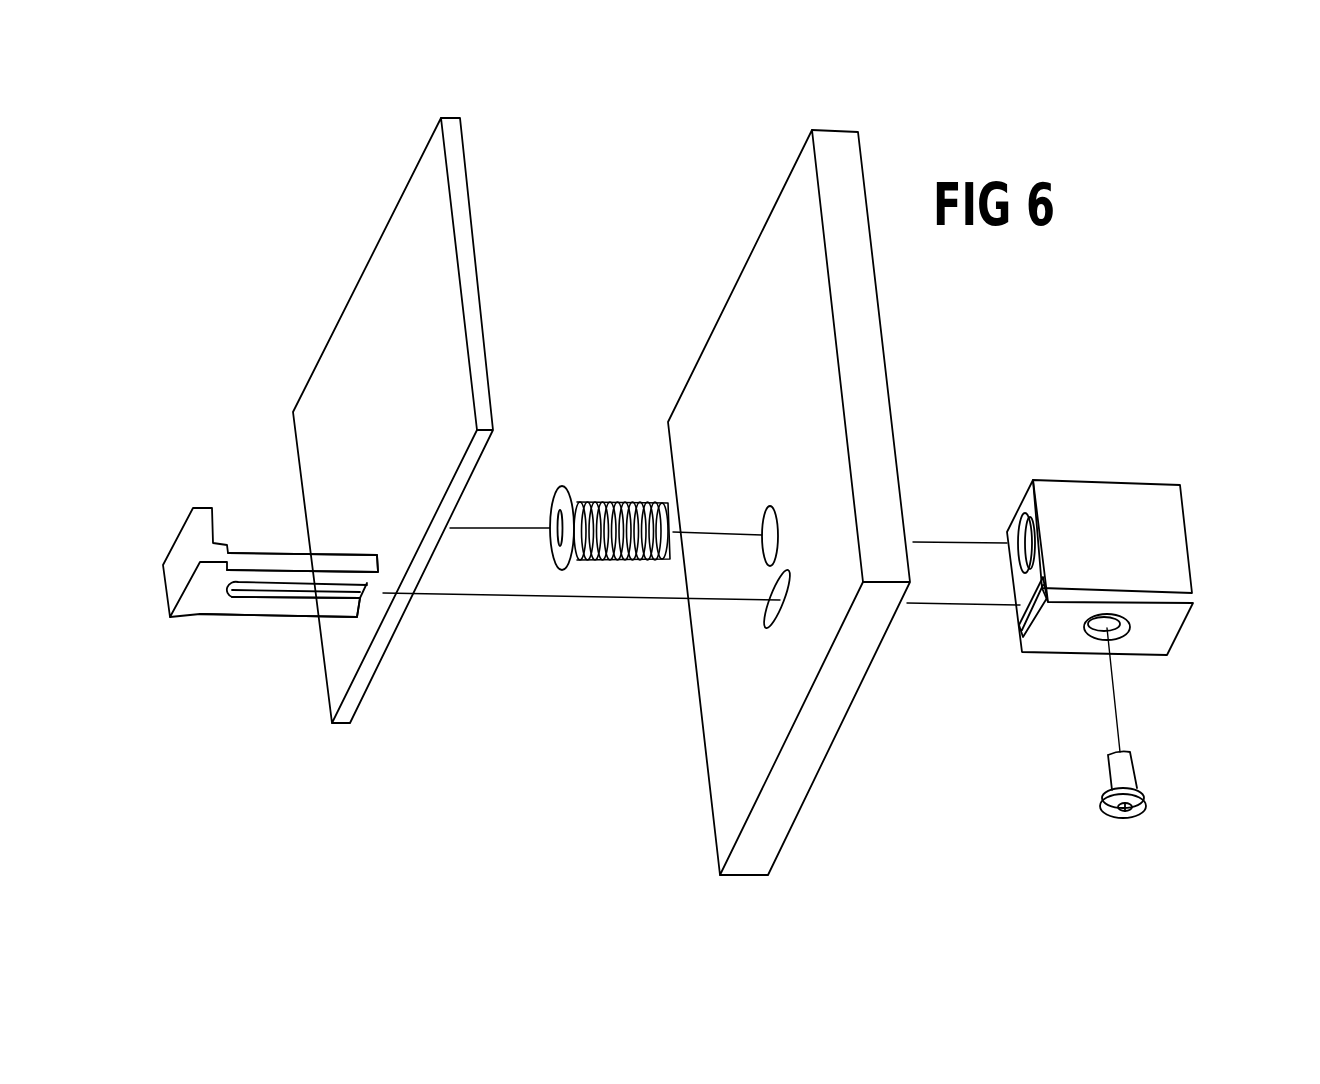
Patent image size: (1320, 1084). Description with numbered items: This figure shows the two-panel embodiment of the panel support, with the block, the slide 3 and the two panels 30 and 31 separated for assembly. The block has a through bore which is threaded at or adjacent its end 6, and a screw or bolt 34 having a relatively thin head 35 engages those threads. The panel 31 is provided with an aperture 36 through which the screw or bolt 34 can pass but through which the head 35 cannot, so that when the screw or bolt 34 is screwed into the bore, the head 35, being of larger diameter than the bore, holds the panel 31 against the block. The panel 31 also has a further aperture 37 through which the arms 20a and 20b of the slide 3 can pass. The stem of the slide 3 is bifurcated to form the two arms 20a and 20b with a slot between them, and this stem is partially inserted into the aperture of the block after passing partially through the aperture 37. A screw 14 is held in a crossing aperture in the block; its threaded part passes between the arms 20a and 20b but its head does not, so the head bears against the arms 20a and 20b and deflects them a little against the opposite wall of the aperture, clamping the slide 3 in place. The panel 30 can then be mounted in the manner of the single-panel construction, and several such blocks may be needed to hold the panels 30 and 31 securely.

The slide 3 is at (197, 602).
The arm 20a is at (307, 610).
The arm 20b is at (278, 560).
The panel 30 is at (438, 213).
The panel 31 is at (797, 237).
The screw or bolt 34 is at (622, 503).
The head 35 is at (563, 570).
The aperture 36 is at (779, 525).
The further aperture 37 is at (766, 629).
The end 6 is at (1020, 591).
The screw 14 is at (1145, 805).